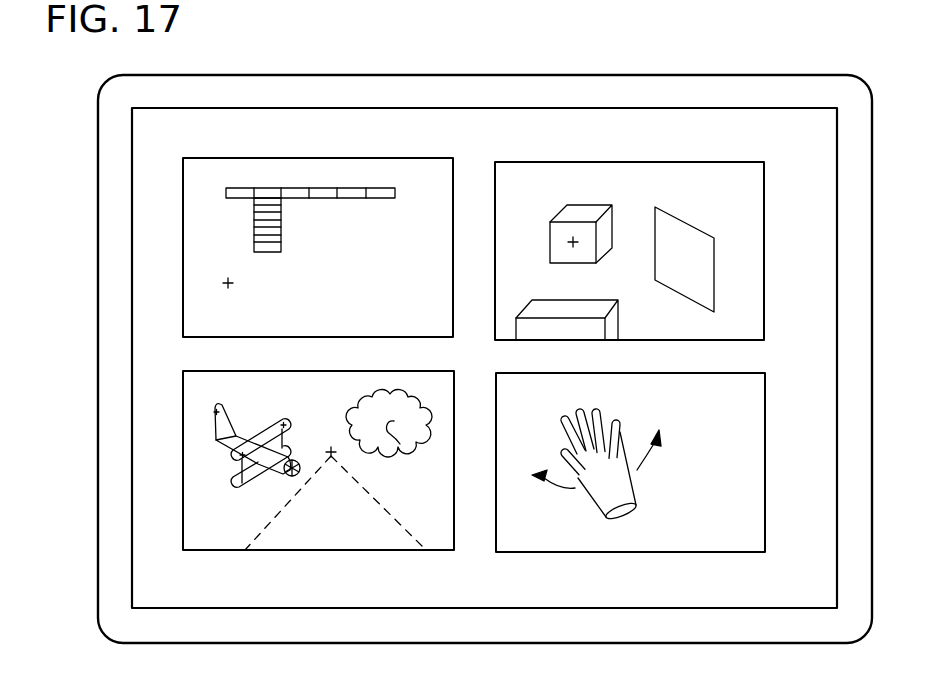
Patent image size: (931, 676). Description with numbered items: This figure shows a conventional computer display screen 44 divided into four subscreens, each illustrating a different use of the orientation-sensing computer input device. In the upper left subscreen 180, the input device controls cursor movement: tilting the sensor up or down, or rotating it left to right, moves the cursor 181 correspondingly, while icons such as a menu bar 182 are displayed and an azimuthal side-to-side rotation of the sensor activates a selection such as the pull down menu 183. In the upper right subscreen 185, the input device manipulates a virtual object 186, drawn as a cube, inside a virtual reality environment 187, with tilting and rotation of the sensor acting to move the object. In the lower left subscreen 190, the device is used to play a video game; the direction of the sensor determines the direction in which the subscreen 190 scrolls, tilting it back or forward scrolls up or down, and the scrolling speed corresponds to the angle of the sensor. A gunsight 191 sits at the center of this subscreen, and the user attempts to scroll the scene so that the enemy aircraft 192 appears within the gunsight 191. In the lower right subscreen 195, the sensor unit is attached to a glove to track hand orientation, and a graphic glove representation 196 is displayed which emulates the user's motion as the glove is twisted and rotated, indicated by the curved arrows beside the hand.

The display screen 44 is at (365, 110).
The subscreen 180 is at (377, 158).
The cursor 181 is at (238, 288).
The menu bar 182 is at (373, 198).
The pull down menu 183 is at (281, 225).
The subscreen 185 is at (594, 162).
The virtual object 186 is at (612, 213).
The virtual reality environment 187 is at (671, 322).
The subscreen 190 is at (375, 550).
The gunsight 191 is at (328, 444).
The enemy aircraft 192 is at (262, 424).
The subscreen 195 is at (590, 552).
The glove representation 196 is at (616, 427).